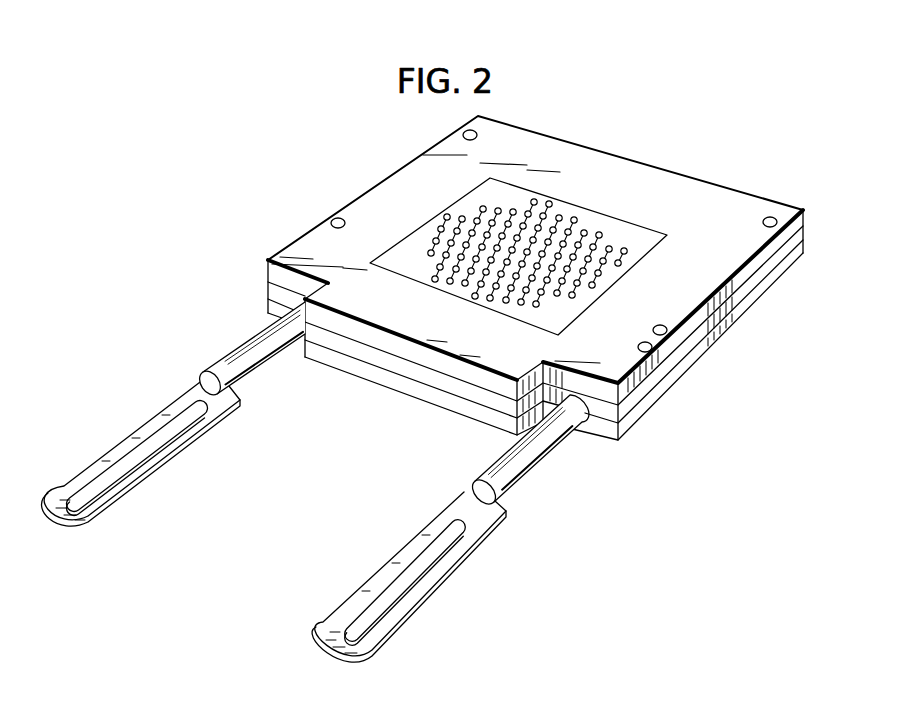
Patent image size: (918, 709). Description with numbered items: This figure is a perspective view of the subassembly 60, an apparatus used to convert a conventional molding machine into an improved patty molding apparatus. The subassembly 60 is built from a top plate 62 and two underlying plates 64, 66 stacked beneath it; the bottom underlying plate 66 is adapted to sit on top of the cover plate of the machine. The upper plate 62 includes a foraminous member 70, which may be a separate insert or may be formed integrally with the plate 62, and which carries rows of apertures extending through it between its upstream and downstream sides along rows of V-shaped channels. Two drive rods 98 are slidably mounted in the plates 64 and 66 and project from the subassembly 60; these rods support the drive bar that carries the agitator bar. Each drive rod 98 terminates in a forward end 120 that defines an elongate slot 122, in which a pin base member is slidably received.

The subassembly 60 is at (358, 176).
The top plate 62 is at (311, 240).
The underlying plate 64 is at (281, 283).
The bottom underlying plate 66 is at (277, 305).
The foraminous member 70 is at (532, 182).
The drive rod 98 is at (246, 353).
The forward end 120 is at (118, 491).
The elongate slot 122 is at (157, 455).